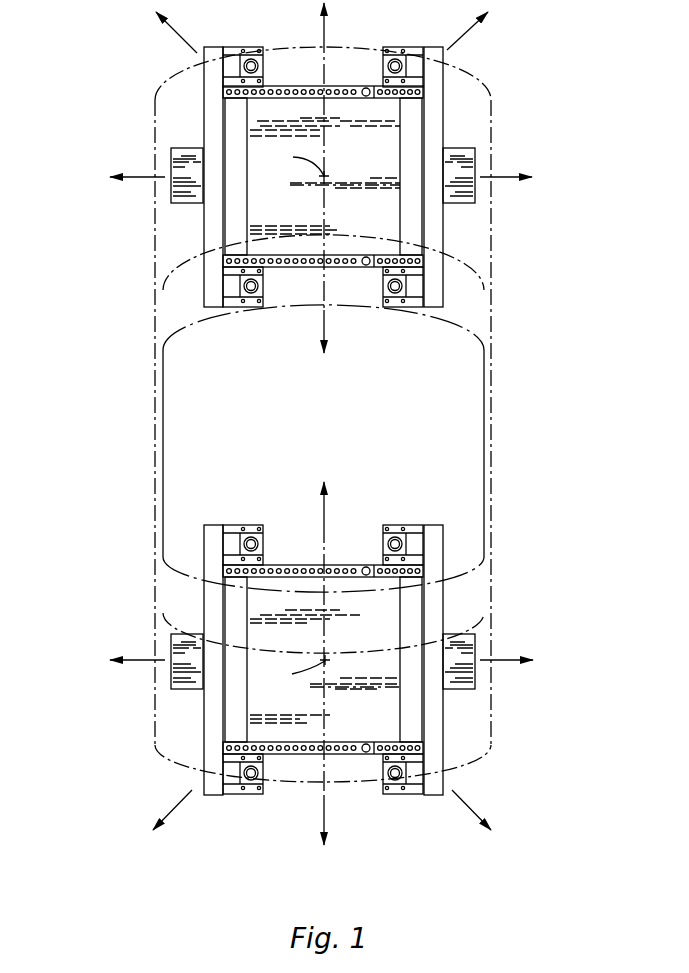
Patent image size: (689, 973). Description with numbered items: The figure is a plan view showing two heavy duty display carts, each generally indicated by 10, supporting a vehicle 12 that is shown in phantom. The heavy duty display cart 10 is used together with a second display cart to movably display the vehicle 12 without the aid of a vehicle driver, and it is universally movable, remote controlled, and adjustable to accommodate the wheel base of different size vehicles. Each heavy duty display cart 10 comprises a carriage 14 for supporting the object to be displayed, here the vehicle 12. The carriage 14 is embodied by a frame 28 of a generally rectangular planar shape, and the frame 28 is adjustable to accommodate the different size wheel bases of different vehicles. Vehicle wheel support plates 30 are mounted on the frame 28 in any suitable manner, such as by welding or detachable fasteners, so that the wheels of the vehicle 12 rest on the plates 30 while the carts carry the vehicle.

The heavy duty display cart 10 is at (338, 424).
The vehicle 12 is at (493, 415).
The carriage 14 is at (326, 421).
The frame 28 is at (224, 92).
The vehicle wheel support plates 30 is at (178, 152).